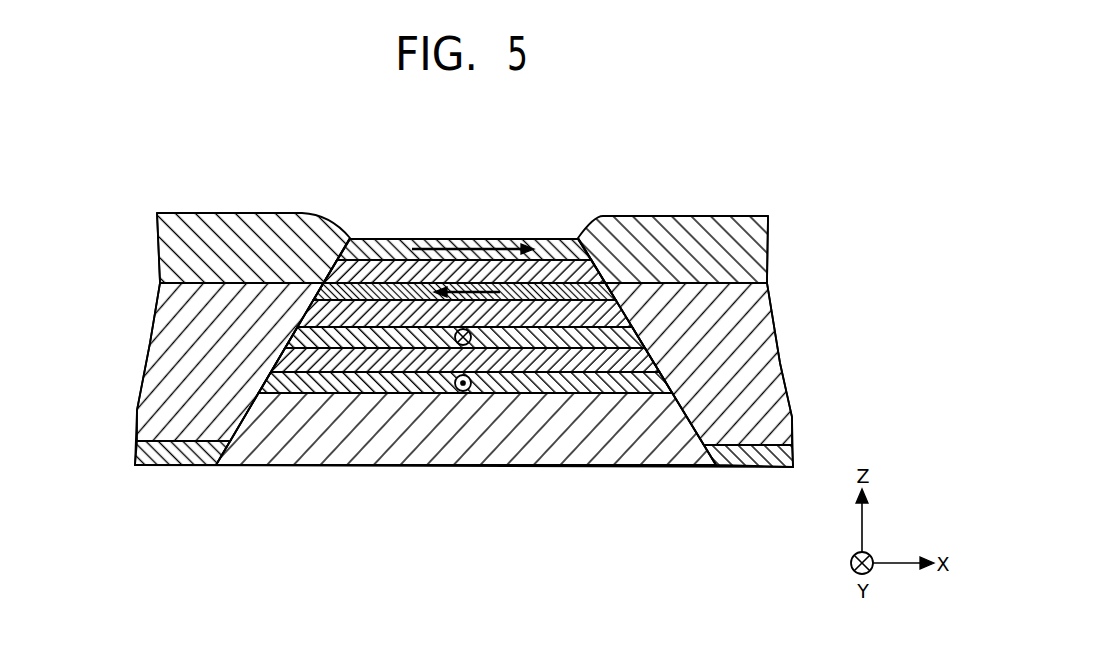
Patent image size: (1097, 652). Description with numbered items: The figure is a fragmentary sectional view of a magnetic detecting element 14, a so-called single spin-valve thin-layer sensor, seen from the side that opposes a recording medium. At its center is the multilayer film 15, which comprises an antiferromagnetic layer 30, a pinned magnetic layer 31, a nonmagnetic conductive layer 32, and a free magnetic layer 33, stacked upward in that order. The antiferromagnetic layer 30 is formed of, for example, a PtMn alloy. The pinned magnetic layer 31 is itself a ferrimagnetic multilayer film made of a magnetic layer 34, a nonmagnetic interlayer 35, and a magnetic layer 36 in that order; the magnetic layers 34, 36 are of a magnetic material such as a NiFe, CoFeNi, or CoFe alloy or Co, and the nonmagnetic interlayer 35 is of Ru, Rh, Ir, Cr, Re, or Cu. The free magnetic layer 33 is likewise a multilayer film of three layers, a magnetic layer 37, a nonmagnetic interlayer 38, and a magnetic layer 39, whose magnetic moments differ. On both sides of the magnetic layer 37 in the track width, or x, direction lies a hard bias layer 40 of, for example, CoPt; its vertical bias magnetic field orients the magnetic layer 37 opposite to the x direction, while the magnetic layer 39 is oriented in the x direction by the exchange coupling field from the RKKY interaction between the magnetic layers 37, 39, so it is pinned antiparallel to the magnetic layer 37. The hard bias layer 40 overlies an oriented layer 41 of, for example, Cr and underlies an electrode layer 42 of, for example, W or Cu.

The magnetic detecting element 14 is at (552, 221).
The multilayer film 15 is at (361, 237).
The antiferromagnetic layer 30 is at (283, 418).
The pinned magnetic layer 31 is at (463, 510).
The nonmagnetic conductive layer 32 is at (548, 310).
The free magnetic layer 33 is at (512, 185).
The magnetic layer 34 is at (347, 380).
The nonmagnetic interlayer 35 is at (390, 362).
The magnetic layer 36 is at (432, 340).
The magnetic layer 37 is at (382, 290).
The nonmagnetic interlayer 38 is at (413, 262).
The magnetic layer 39 is at (478, 240).
The hard bias layer 40 is at (158, 375).
The oriented layer 41 is at (142, 450).
The electrode layer 42 is at (212, 245).